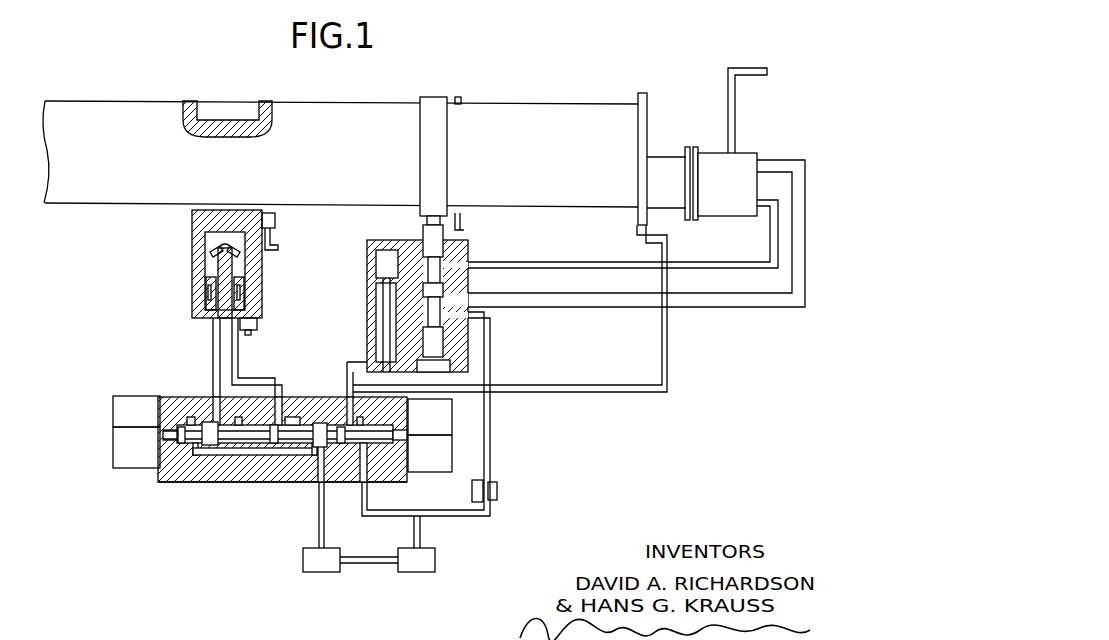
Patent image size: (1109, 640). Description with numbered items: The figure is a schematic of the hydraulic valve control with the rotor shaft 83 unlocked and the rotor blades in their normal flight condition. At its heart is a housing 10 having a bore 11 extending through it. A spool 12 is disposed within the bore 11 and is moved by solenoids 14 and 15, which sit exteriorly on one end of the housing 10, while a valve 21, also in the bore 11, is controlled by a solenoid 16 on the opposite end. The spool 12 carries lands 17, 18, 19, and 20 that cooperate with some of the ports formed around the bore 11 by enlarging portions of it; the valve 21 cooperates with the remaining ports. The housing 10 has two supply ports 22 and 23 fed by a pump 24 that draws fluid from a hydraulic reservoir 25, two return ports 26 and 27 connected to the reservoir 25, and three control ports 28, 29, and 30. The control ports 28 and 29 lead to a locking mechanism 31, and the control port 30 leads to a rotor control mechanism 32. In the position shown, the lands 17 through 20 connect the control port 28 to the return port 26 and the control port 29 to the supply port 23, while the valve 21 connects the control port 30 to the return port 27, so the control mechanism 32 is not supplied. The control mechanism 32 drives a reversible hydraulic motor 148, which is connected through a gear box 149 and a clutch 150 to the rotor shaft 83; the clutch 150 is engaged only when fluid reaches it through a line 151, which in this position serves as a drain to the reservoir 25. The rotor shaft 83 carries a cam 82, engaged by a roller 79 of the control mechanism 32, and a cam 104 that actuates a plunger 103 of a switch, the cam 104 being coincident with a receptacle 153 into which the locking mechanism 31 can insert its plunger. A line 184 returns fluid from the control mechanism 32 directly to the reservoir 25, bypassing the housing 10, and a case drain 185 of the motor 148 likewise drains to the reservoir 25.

The housing 10 is at (178, 488).
The bore 11 is at (270, 488).
The spool 12 is at (155, 468).
The solenoid 14 is at (152, 424).
The solenoid 15 is at (152, 464).
The solenoid 16 is at (446, 467).
The land 17 is at (160, 482).
The land 18 is at (200, 460).
The land 19 is at (235, 457).
The land 20 is at (297, 465).
The valve 21 is at (362, 447).
The supply port 22 is at (190, 400).
The supply port 23 is at (326, 397).
The pump 24 is at (320, 572).
The hydraulic reservoir 25 is at (435, 563).
The return port 26 is at (245, 397).
The return port 27 is at (446, 431).
The control port 28 is at (203, 397).
The control port 29 is at (292, 397).
The control port 30 is at (335, 470).
The locking mechanism 31 is at (190, 262).
The rotor control mechanism 32 is at (366, 263).
The roller 79 is at (424, 226).
The cam 82 is at (422, 98).
The rotor shaft 83 is at (540, 103).
The plunger 103 is at (463, 223).
The cam 104 is at (458, 97).
The reversible hydraulic motor 148 is at (745, 155).
The gear box 149 is at (662, 166).
The clutch 150 is at (642, 92).
The line 151 is at (668, 335).
The receptacle 153 is at (255, 118).
The line 184 is at (490, 445).
The case drain 185 is at (752, 68).